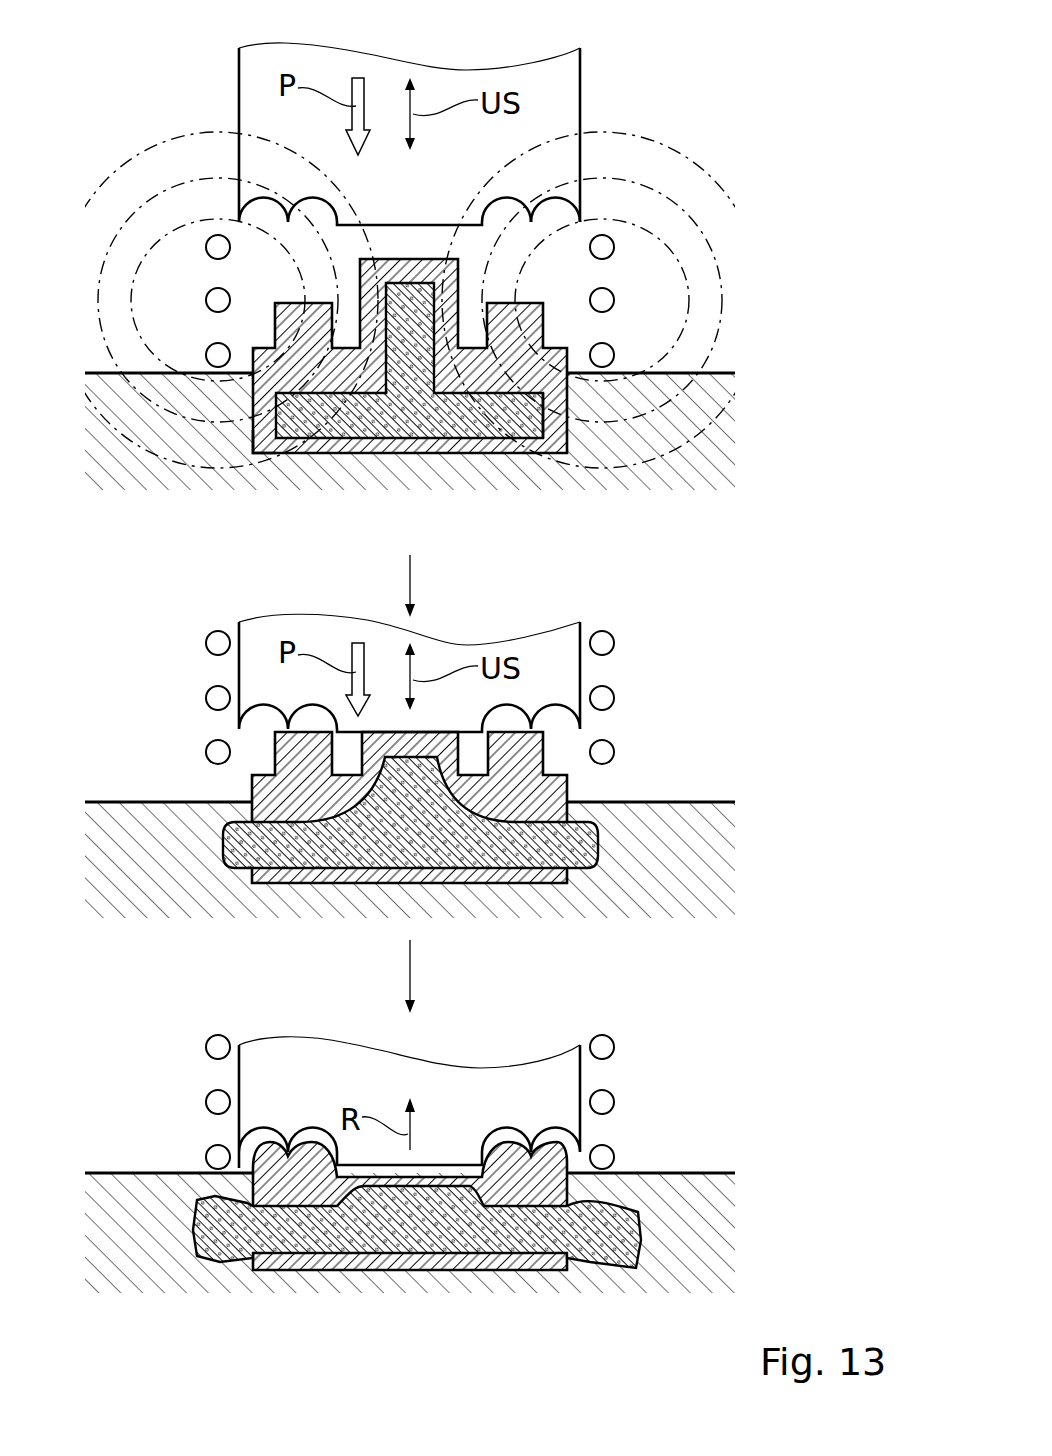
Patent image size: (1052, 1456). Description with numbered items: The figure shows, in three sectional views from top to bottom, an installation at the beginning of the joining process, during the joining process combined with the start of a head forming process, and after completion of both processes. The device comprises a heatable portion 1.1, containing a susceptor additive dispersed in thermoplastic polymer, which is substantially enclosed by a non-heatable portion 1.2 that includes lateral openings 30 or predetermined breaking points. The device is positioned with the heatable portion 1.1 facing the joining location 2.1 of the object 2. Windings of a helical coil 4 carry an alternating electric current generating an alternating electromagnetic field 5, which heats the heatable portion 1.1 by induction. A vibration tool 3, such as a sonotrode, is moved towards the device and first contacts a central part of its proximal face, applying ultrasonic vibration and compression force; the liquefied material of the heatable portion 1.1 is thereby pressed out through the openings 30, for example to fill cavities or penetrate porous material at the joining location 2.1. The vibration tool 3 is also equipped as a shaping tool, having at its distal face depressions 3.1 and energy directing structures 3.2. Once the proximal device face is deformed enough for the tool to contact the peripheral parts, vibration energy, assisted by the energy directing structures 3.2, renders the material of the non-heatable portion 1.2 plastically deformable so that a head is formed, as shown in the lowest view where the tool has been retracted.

The heatable portion 1.1 is at (365, 410).
The non-heatable portion 1.2 is at (566, 420).
The object 2 is at (615, 450).
The joining location 2.1 is at (550, 407).
The vibration tool 3 is at (462, 173).
The depressions 3.1 is at (555, 212).
The energy directing structures 3.2 is at (530, 214).
The helical coil 4 is at (615, 250).
The alternating electromagnetic field 5 is at (657, 138).
The lateral openings 30 is at (258, 426).